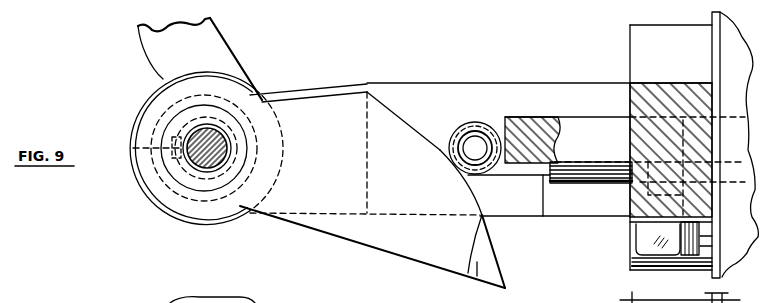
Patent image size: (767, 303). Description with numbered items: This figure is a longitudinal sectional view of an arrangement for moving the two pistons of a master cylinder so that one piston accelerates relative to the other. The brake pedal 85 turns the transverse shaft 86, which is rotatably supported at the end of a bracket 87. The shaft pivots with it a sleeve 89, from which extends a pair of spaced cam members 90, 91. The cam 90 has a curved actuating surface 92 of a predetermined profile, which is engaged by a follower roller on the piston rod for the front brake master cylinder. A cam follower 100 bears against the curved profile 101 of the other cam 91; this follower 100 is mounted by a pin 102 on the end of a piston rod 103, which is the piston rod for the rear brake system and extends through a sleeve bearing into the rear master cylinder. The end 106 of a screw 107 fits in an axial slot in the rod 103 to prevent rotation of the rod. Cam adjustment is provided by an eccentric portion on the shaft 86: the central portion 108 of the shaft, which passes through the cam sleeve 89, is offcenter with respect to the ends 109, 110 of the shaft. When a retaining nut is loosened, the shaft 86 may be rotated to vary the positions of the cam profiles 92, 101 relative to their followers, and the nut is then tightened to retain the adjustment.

The brake pedal 85 is at (212, 48).
The transverse shaft 86 is at (166, 121).
The bracket 87 is at (427, 95).
The sleeve 89 is at (280, 166).
The cam member 90 is at (490, 270).
The cam member 91 is at (343, 226).
The curved actuating surface 92 is at (495, 240).
The cam follower 100 is at (455, 127).
The curved profile 101 is at (465, 280).
The pin 102 is at (483, 140).
The piston rod 103 is at (585, 125).
The end of screw 106 is at (628, 170).
The screw 107 is at (641, 240).
The central portion of shaft 108 is at (232, 150).
The end of shaft 109 is at (152, 202).
The end of shaft 110 is at (201, 139).